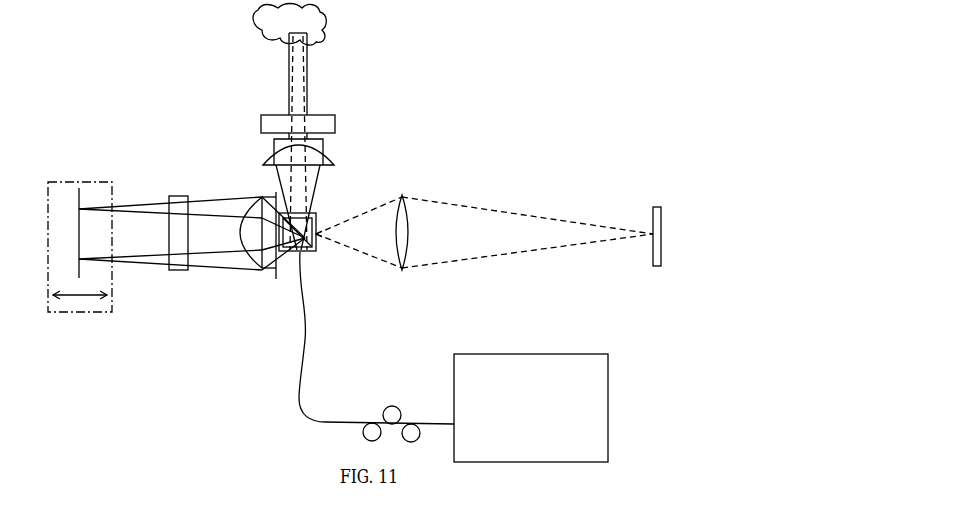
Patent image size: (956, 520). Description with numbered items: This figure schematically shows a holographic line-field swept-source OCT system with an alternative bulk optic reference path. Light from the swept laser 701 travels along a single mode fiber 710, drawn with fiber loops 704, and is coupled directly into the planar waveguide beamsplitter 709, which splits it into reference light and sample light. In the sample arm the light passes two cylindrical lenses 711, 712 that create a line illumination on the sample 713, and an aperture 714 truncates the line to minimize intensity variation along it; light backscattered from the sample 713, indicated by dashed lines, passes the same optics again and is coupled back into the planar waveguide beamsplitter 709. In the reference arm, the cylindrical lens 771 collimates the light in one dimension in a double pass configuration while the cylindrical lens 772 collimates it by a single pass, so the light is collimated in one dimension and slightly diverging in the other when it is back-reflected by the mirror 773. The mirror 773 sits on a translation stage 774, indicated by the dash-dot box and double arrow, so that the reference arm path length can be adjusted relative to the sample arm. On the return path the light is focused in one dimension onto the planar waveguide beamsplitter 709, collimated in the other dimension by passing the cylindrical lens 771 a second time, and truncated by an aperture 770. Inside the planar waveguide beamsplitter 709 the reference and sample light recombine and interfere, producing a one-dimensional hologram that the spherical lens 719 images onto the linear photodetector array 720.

The swept laser 701 is at (611, 403).
The optical fiber coil 704 is at (392, 402).
The planar waveguide beamsplitter 709 is at (313, 255).
The single mode fiber 710 is at (297, 352).
The cylindrical lens 711 is at (343, 158).
The cylindrical lens 712 is at (340, 120).
The sample 713 is at (330, 23).
The aperture 714 is at (330, 139).
The spherical lens 719 is at (405, 275).
The linear photodetector array 720 is at (652, 270).
The aperture 770 is at (272, 283).
The cylindrical lens 771 is at (257, 195).
The cylindrical lens 772 is at (178, 278).
The mirror 773 is at (80, 190).
The scanning stage 774 is at (98, 316).